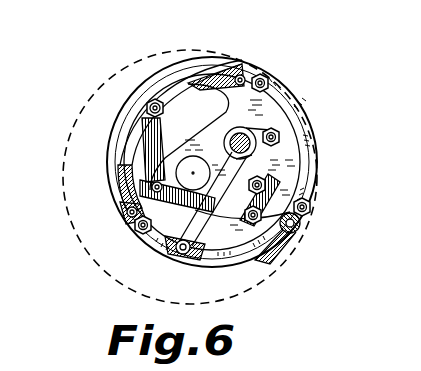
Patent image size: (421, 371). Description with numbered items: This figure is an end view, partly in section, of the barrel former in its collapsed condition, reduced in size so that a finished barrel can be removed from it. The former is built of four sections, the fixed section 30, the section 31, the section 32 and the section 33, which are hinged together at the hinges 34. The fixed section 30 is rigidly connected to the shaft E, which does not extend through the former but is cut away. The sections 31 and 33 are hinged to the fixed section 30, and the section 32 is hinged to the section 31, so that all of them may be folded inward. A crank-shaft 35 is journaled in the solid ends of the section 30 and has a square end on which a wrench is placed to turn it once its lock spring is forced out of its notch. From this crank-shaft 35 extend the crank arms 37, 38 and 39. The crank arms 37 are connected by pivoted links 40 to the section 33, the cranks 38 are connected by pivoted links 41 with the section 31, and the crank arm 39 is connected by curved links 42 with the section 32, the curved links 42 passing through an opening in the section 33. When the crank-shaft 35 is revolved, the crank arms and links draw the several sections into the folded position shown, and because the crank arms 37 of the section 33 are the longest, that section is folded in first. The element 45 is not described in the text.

The shaft E is at (167, 150).
The fixed section 30 is at (312, 143).
The section 31 is at (216, 236).
The section 32 is at (110, 164).
The section 33 is at (200, 92).
The hinge 34 is at (244, 74).
The crank-shaft 35 is at (280, 133).
The crank arm 37 is at (309, 208).
The crank arm 38 is at (248, 134).
The crank arm 39 is at (270, 177).
The pivoted link 40 is at (138, 234).
The pivoted link 41 is at (177, 192).
The curved link 42 is at (168, 242).
The strip 45 is at (147, 163).